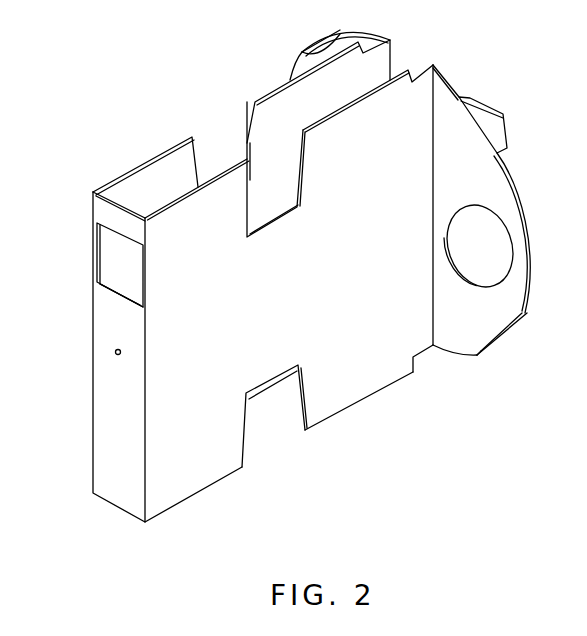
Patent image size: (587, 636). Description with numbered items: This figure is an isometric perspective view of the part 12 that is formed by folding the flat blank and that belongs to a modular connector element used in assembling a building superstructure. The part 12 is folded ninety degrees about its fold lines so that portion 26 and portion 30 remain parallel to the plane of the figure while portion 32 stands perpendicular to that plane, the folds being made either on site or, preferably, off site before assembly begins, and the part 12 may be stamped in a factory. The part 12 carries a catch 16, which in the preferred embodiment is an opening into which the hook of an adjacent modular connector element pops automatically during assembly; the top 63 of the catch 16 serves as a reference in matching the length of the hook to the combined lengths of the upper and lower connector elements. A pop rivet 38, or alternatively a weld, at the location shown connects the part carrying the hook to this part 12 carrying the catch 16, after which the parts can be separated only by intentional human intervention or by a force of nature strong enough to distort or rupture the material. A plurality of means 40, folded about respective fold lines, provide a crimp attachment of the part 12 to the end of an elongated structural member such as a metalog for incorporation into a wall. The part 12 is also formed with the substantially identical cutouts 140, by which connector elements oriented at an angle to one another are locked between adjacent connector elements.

The part 12 is at (347, 418).
The catch 16 is at (113, 223).
The portion 26 is at (516, 300).
The portion 30 is at (107, 425).
The portion 32 is at (393, 361).
The pop rivet 38 is at (115, 350).
The means for crimp attachment 40 is at (490, 98).
The top of the catch 63 is at (113, 223).
The cutout 140 is at (213, 148).